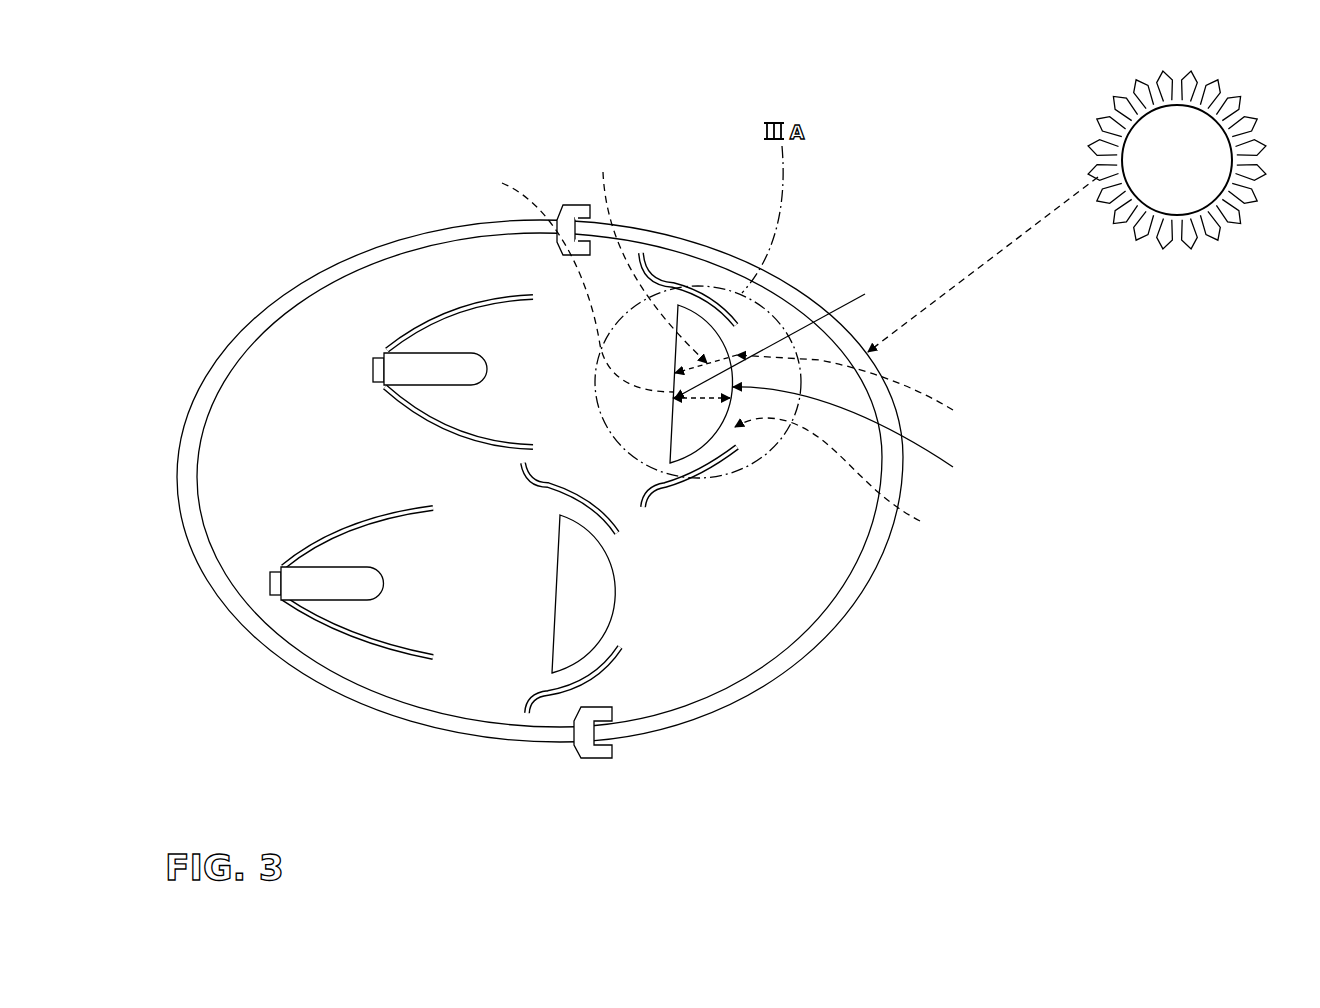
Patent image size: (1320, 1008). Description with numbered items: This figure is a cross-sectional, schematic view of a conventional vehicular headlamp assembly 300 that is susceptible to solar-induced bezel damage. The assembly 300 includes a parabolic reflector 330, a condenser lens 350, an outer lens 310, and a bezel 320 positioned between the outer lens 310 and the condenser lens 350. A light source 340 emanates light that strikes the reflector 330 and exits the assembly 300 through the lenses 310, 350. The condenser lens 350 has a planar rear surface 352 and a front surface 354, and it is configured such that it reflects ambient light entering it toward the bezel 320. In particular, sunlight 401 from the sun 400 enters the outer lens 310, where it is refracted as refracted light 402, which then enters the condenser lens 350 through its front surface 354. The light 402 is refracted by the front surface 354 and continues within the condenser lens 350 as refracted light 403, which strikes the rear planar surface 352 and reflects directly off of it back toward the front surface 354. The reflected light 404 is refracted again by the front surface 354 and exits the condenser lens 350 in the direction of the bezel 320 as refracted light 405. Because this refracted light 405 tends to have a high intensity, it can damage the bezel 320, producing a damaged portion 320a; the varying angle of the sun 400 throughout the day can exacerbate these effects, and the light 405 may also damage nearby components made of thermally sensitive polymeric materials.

The vehicular headlamp assembly 300 is at (898, 163).
The outer lens 310 is at (645, 233).
The bezel 320 is at (676, 302).
The damaged portion 320a is at (735, 437).
The parabolic reflector 330 is at (455, 307).
The light source 340 is at (418, 363).
The condenser lens 350 is at (717, 355).
The planar rear surface 352 is at (791, 336).
The front surface 354 is at (864, 435).
The sun 400 is at (1217, 220).
The sunlight 401 is at (1003, 248).
The refracted light 402 is at (832, 399).
The refracted light 403 is at (644, 254).
The reflected light 404 is at (573, 274).
The refracted light 405 is at (847, 475).